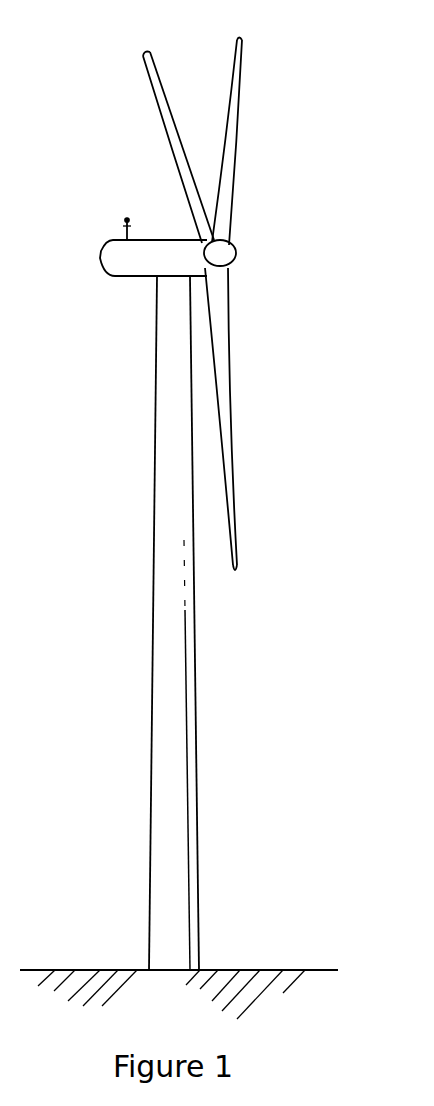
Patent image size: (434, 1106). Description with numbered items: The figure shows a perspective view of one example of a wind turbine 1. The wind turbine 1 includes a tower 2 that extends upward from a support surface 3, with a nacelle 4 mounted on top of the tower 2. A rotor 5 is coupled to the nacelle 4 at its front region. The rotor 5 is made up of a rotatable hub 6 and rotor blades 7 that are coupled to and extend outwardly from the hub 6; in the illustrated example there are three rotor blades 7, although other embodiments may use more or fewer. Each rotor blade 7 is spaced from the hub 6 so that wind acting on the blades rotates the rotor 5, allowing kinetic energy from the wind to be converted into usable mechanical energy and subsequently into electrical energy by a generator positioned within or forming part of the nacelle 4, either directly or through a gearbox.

The wind turbine 1 is at (241, 494).
The tower 2 is at (157, 718).
The support surface 3 is at (88, 970).
The nacelle 4 is at (137, 277).
The rotor 5 is at (241, 237).
The hub 6 is at (234, 262).
The rotor blade 7 is at (230, 72).